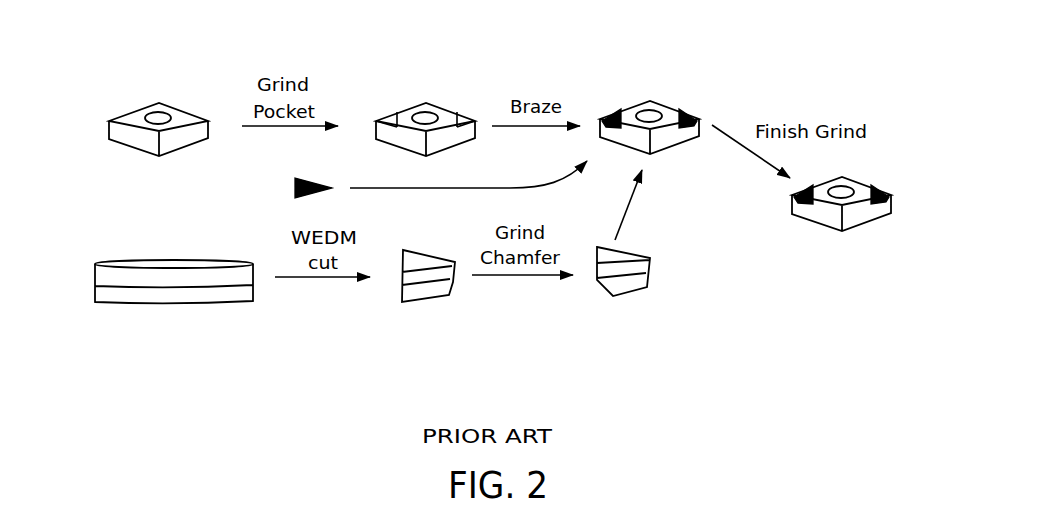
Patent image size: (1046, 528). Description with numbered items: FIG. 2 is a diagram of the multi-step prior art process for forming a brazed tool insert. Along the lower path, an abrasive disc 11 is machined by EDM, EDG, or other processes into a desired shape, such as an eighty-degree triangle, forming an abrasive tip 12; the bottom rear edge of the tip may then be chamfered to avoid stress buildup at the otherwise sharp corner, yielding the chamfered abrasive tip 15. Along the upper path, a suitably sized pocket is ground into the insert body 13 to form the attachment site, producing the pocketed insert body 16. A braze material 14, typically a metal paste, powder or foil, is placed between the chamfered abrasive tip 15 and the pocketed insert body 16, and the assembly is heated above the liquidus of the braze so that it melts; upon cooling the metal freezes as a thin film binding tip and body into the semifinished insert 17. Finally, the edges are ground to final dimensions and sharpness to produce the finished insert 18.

The abrasive disc 11 is at (174, 260).
The abrasive tip 12 is at (428, 260).
The insert body 13 is at (158, 108).
The braze material 14 is at (293, 188).
The chamfered abrasive tip 15 is at (643, 259).
The pocketed insert body 16 is at (425, 106).
The semifinished insert 17 is at (659, 105).
The finished insert 18 is at (860, 191).